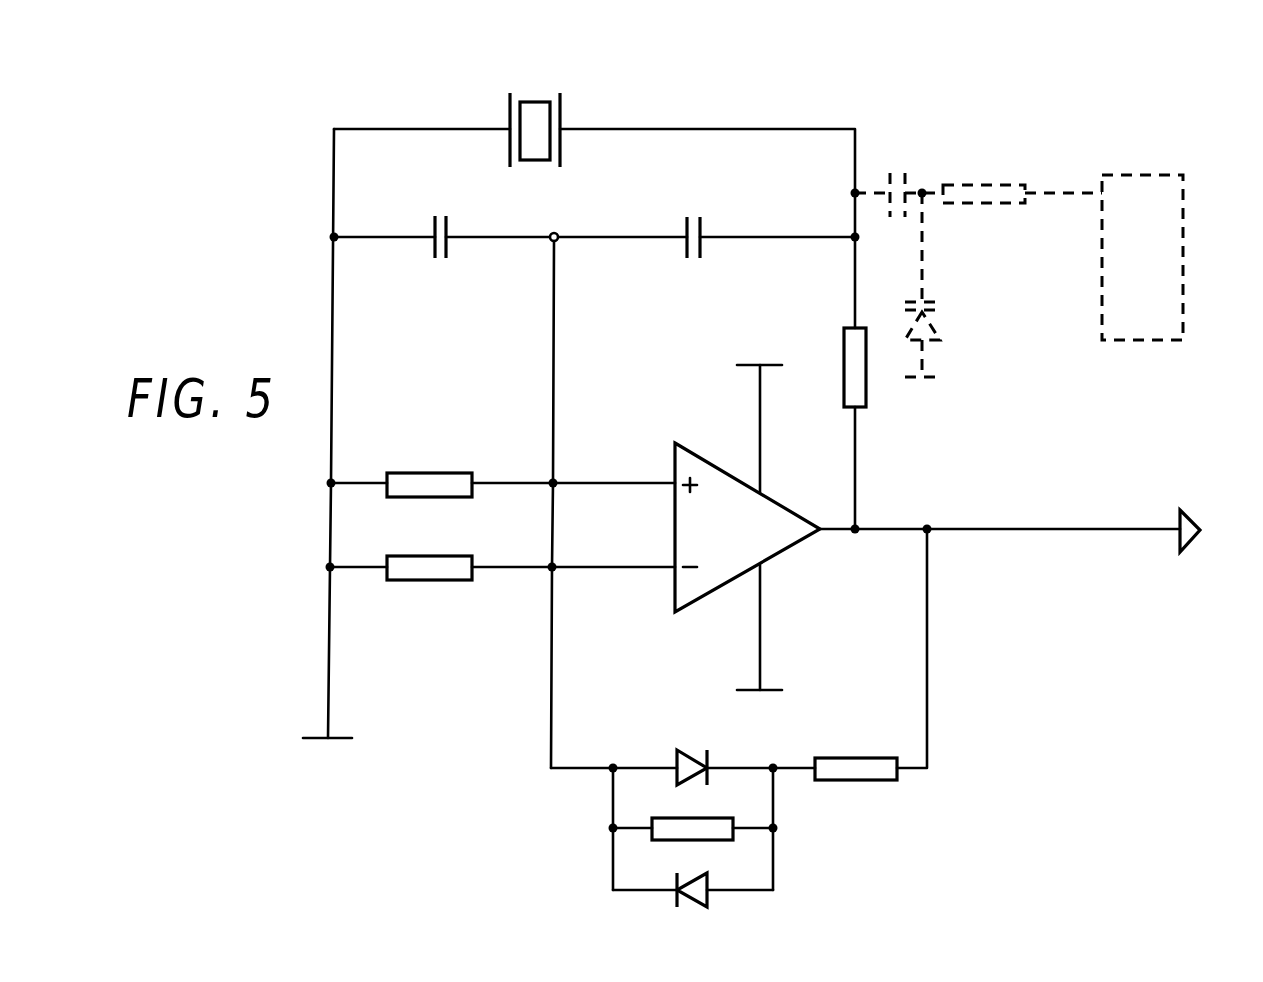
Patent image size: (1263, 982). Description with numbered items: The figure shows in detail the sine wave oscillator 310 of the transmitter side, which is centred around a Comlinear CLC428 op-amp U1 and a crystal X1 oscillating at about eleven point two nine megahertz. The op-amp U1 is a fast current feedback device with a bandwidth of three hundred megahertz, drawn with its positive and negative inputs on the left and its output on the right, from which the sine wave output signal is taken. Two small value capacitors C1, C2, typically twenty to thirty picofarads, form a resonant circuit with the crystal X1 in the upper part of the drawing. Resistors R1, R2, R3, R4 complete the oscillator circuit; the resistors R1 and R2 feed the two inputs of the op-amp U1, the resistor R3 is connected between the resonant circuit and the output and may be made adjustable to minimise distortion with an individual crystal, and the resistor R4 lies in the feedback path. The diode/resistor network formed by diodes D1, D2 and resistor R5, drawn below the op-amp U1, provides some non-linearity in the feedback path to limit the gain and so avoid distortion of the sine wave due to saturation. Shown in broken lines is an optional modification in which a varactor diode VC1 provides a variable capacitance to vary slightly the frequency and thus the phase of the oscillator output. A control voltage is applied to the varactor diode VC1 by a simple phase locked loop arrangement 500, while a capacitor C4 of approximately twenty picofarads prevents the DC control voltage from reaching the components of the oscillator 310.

The sine wave oscillator 310 is at (916, 52).
The phase locked loop arrangement 500 is at (1141, 170).
The crystal X1 is at (535, 116).
The capacitor C1 is at (459, 225).
The capacitor C2 is at (712, 227).
The capacitor C4 is at (897, 177).
The resistor R1 is at (429, 469).
The resistor R2 is at (429, 553).
The resistor R3 is at (840, 367).
The resistor R4 is at (856, 753).
The resistor R5 is at (692, 815).
The op-amp U1 is at (747, 527).
The diode D1 is at (692, 753).
The diode D2 is at (694, 878).
The varactor diode VC1 is at (945, 317).